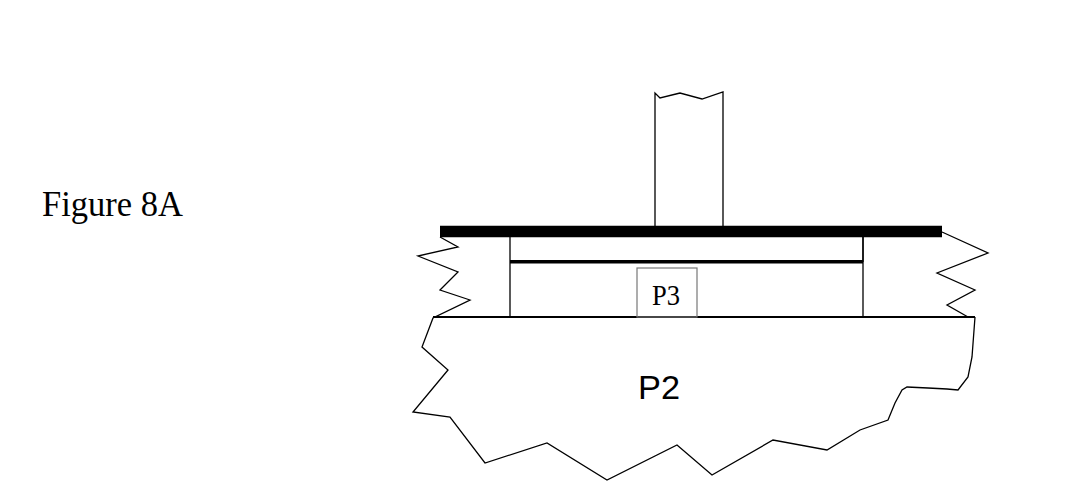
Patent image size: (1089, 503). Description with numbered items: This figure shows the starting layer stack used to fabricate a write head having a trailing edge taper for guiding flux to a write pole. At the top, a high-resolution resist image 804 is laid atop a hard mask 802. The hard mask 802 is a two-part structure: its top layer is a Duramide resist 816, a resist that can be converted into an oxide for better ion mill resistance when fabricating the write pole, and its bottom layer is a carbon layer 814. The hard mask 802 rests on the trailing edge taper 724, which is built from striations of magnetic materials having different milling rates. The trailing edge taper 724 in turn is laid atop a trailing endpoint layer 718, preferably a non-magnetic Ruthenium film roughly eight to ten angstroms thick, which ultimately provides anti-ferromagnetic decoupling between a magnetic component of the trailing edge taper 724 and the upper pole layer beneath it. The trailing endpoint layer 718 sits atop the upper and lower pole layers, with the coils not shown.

The high-resolution resist image 804 is at (752, 113).
The hard mask 802 is at (902, 218).
The Duramide resist layer 816 is at (493, 222).
The bottom carbon layer 814 is at (802, 238).
The trailing edge taper 724 is at (540, 247).
The trailing endpoint layer 718 is at (868, 258).